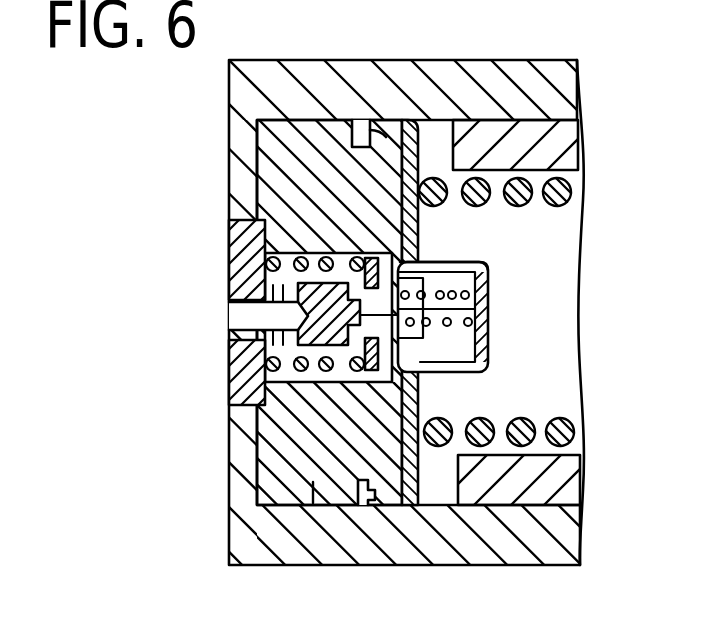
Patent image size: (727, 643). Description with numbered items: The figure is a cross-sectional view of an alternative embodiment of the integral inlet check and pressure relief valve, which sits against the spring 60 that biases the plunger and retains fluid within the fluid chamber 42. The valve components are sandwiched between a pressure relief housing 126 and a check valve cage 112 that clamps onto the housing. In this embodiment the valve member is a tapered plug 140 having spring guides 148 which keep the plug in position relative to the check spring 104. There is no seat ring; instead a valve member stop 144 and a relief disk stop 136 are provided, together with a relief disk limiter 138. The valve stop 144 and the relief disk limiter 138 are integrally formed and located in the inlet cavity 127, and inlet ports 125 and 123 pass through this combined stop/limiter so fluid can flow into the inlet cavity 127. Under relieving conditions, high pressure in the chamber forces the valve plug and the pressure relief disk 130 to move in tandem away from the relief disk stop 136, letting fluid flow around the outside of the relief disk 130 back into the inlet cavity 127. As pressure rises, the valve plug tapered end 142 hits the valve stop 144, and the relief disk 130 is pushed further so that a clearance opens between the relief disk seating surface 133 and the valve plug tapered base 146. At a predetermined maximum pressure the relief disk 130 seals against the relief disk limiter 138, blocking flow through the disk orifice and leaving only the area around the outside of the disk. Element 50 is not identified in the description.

The fluid chamber 42 is at (555, 400).
The housing block 50 is at (555, 490).
The spring 60 is at (560, 432).
The check spring 104 is at (485, 340).
The check valve cage 112 is at (480, 320).
The inlet port 123 is at (285, 292).
The inlet port 125 is at (240, 312).
The pressure relief housing 126 is at (313, 482).
The inlet cavity 127 is at (320, 350).
The pressure relief disk 130 is at (375, 382).
The relief disk seating surface 133 is at (425, 262).
The relief disk stop 136 is at (395, 350).
The relief disk limiter 138 is at (265, 380).
The tapered plug 140 is at (420, 385).
The valve plug tapered end 142 is at (350, 285).
The valve member stop 144 is at (240, 360).
The valve plug tapered base 146 is at (480, 300).
The spring guides 148 is at (490, 268).